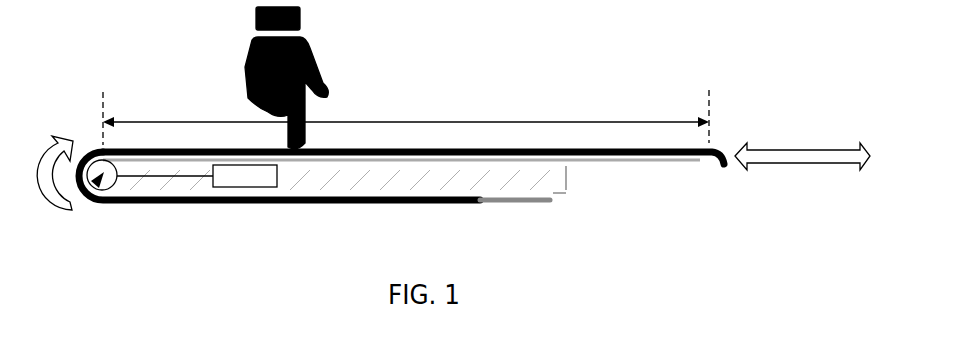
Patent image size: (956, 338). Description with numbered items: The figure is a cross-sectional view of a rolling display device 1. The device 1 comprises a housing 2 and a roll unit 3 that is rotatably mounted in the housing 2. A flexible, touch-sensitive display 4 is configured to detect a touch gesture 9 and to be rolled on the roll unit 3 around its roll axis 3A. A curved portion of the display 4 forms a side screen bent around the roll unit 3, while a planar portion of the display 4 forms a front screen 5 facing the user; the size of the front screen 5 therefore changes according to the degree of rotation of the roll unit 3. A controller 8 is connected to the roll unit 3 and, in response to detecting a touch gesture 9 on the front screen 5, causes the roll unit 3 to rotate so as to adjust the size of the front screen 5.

The device 1 is at (150, 80).
The housing 2 is at (565, 185).
The roll unit 3 is at (87, 155).
The roll axis 3A is at (88, 198).
The flexible, touch-sensitive display 4 is at (433, 148).
The front screen 5 is at (406, 117).
The controller 8 is at (245, 188).
The touch gesture 9 is at (250, 57).